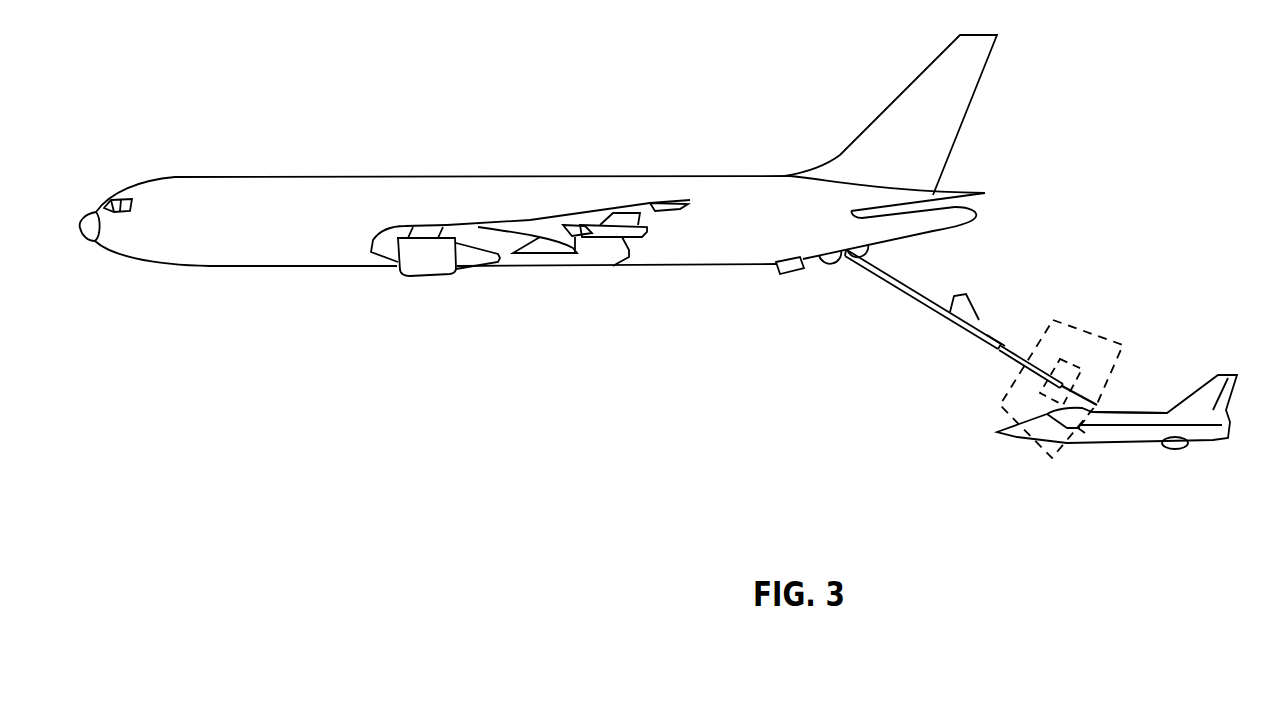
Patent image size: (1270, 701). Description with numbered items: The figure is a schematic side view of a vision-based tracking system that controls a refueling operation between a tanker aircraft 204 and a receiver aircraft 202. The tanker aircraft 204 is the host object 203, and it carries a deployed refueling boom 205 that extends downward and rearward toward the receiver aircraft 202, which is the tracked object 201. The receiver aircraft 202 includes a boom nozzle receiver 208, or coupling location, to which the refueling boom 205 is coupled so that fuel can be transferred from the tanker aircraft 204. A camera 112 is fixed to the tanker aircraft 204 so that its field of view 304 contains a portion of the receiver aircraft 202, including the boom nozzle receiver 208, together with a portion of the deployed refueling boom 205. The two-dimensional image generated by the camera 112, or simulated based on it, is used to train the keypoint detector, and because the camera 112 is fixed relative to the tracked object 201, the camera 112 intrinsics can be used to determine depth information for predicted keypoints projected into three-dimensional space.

The camera 112 is at (786, 256).
The tracked object 201 is at (1128, 431).
The receiver aircraft 202 is at (1206, 437).
The host object 203 is at (538, 155).
The tanker aircraft 204 is at (469, 177).
The refueling boom 205 is at (987, 336).
The boom nozzle receiver 208 is at (1133, 418).
The field of view 304 is at (1086, 331).